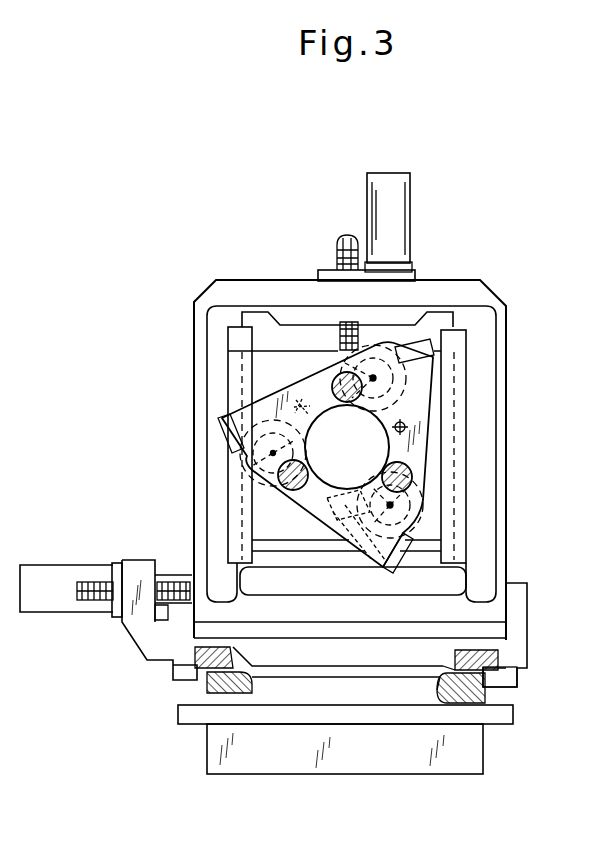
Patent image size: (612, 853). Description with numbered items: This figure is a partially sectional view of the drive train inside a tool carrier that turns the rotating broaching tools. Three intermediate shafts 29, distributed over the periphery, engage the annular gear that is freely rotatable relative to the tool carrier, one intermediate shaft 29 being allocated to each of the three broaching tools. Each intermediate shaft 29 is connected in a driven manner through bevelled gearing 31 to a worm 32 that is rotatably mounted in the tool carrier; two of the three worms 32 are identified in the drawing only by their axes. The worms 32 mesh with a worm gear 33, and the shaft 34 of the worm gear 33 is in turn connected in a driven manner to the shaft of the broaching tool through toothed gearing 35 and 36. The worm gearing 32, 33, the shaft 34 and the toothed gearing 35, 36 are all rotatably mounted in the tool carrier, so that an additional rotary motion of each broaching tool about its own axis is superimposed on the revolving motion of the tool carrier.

The intermediate shaft 29 is at (406, 425).
The bevelled gearing 31 is at (425, 512).
The worm 32 is at (436, 352).
The worm gear 33 is at (413, 357).
The shaft 34 is at (345, 322).
The toothed gearing 35 is at (379, 357).
The toothed gearing 36 is at (335, 373).